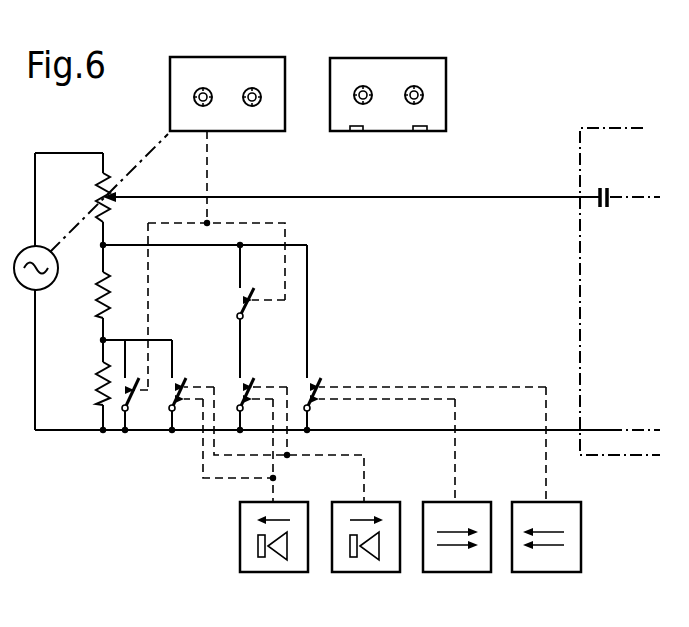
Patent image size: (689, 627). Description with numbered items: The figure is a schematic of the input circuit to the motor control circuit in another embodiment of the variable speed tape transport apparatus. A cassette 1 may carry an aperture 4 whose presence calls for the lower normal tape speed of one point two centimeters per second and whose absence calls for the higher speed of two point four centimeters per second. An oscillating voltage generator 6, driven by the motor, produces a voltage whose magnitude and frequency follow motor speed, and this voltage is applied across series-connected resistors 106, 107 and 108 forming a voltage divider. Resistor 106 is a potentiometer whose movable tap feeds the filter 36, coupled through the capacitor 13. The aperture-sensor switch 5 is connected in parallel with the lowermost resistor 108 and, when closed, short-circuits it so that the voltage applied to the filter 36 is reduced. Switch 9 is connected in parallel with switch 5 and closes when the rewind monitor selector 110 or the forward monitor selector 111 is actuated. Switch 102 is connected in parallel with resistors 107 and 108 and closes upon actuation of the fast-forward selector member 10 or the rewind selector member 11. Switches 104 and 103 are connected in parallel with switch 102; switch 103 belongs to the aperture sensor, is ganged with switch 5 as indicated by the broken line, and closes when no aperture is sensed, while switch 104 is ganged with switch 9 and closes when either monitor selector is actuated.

The cassette 1 is at (262, 57).
The aperture 4 is at (356, 131).
The aperture-sensor switch 5 is at (133, 412).
The oscillating voltage generator 6 is at (32, 289).
The switch 9 is at (174, 378).
The fast-forward selector member 10 is at (447, 573).
The rewind selector member 11 is at (543, 573).
The capacitor 13 is at (604, 187).
The high-pass filter 36 is at (586, 287).
The switch 102 is at (322, 378).
The switch 103 is at (252, 376).
The switch 104 is at (238, 301).
The potentiometer 106 is at (100, 192).
The resistor 107 is at (98, 300).
The resistor 108 is at (100, 390).
The rewind monitor selector 110 is at (252, 573).
The forward monitor selector 111 is at (348, 573).